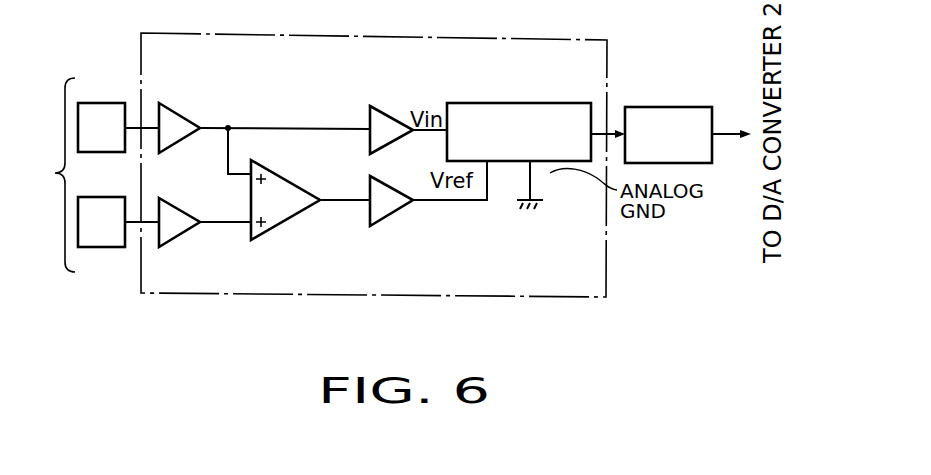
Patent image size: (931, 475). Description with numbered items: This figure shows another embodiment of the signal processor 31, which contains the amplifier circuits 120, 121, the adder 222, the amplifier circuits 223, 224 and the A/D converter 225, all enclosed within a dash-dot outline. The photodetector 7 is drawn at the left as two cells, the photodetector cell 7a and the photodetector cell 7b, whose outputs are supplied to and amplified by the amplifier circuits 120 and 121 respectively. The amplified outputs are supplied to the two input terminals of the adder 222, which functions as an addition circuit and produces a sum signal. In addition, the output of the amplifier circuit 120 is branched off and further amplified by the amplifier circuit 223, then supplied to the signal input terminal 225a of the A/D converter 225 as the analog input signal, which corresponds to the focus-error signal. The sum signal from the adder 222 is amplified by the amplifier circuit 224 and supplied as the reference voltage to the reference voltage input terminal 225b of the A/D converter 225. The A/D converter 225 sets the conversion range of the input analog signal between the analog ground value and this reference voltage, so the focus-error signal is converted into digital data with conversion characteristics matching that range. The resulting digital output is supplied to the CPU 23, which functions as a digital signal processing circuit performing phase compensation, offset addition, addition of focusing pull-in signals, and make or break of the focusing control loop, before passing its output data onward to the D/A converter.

The photodetector 7 is at (82, 175).
The photodetector cell 7a is at (103, 103).
The photodetector cell 7b is at (100, 247).
The amplifier circuit 120 is at (193, 117).
The amplifier circuit 121 is at (177, 230).
The adder 222 is at (295, 207).
The amplifier circuit 223 is at (388, 112).
The amplifier circuit 224 is at (376, 190).
The A/D converter 225 is at (492, 103).
The signal input terminal 225a is at (441, 133).
The reference voltage input terminal 225b is at (493, 162).
The CPU 23 is at (662, 107).
The signal processor 31 is at (460, 37).